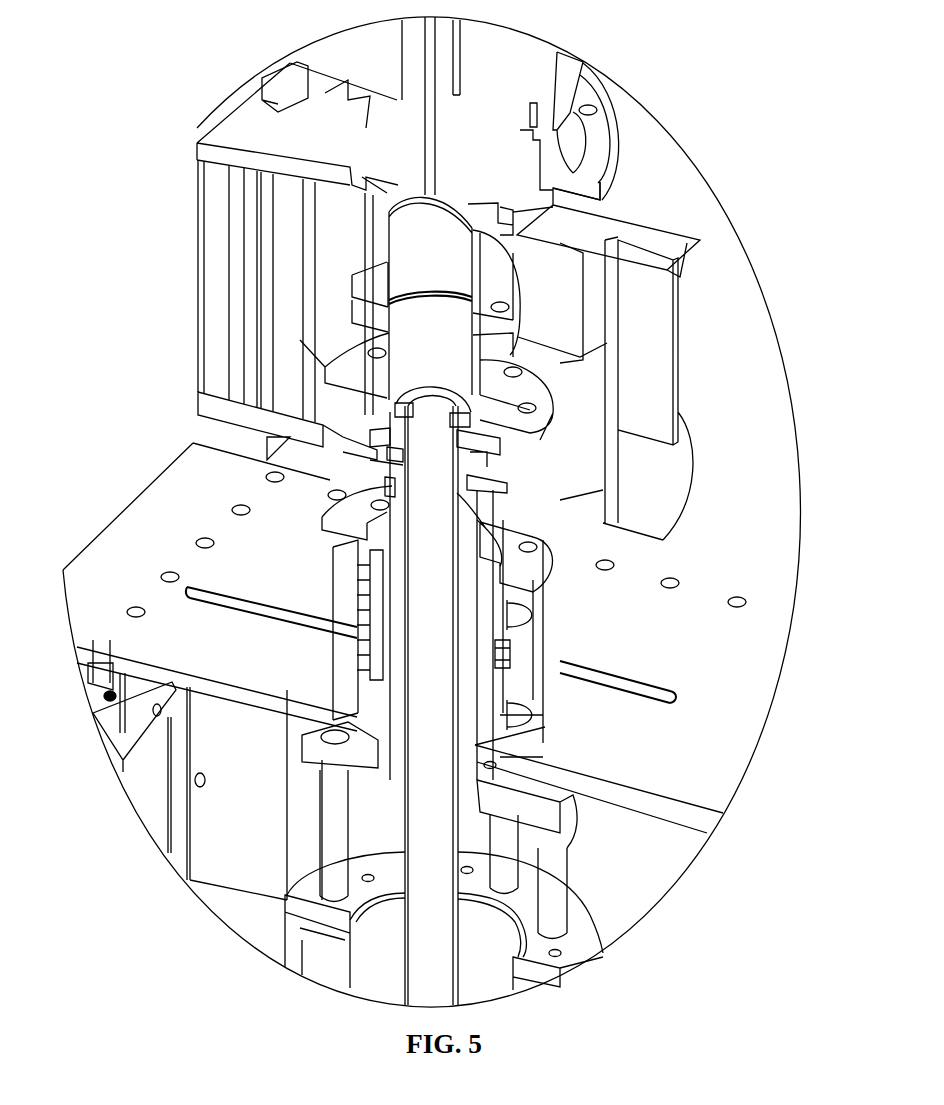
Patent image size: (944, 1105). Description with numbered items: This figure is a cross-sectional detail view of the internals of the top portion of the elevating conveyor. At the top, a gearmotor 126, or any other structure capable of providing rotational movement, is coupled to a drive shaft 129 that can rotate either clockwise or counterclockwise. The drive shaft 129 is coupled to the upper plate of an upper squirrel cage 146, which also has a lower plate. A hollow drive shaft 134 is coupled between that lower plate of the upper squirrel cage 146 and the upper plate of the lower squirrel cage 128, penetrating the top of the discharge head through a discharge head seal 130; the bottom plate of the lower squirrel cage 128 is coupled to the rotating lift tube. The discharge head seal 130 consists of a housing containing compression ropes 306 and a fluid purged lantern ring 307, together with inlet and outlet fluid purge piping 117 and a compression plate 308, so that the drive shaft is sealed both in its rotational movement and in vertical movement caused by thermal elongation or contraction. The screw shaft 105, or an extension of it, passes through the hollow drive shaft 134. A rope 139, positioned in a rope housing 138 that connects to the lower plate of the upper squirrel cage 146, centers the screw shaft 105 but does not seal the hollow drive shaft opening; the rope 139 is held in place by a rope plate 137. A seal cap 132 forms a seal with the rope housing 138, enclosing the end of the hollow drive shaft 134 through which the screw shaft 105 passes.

The screw shaft 105 is at (427, 473).
The inlet and outlet fluid purge piping 117 is at (215, 600).
The gearmotor 126 is at (562, 64).
The lower squirrel cage 128 is at (572, 862).
The drive shaft 129 is at (453, 148).
The discharge head seal 130 is at (545, 727).
The seal cap 132 is at (437, 263).
The hollow drive shaft 134 is at (370, 743).
The rope plate 137 is at (380, 420).
The rope housing 138 is at (323, 408).
The rope 139 is at (400, 438).
The upper squirrel cage 146 is at (683, 296).
The compression ropes 306 is at (498, 615).
The fluid purged lantern ring 307 is at (510, 653).
The compression plate 308 is at (563, 559).